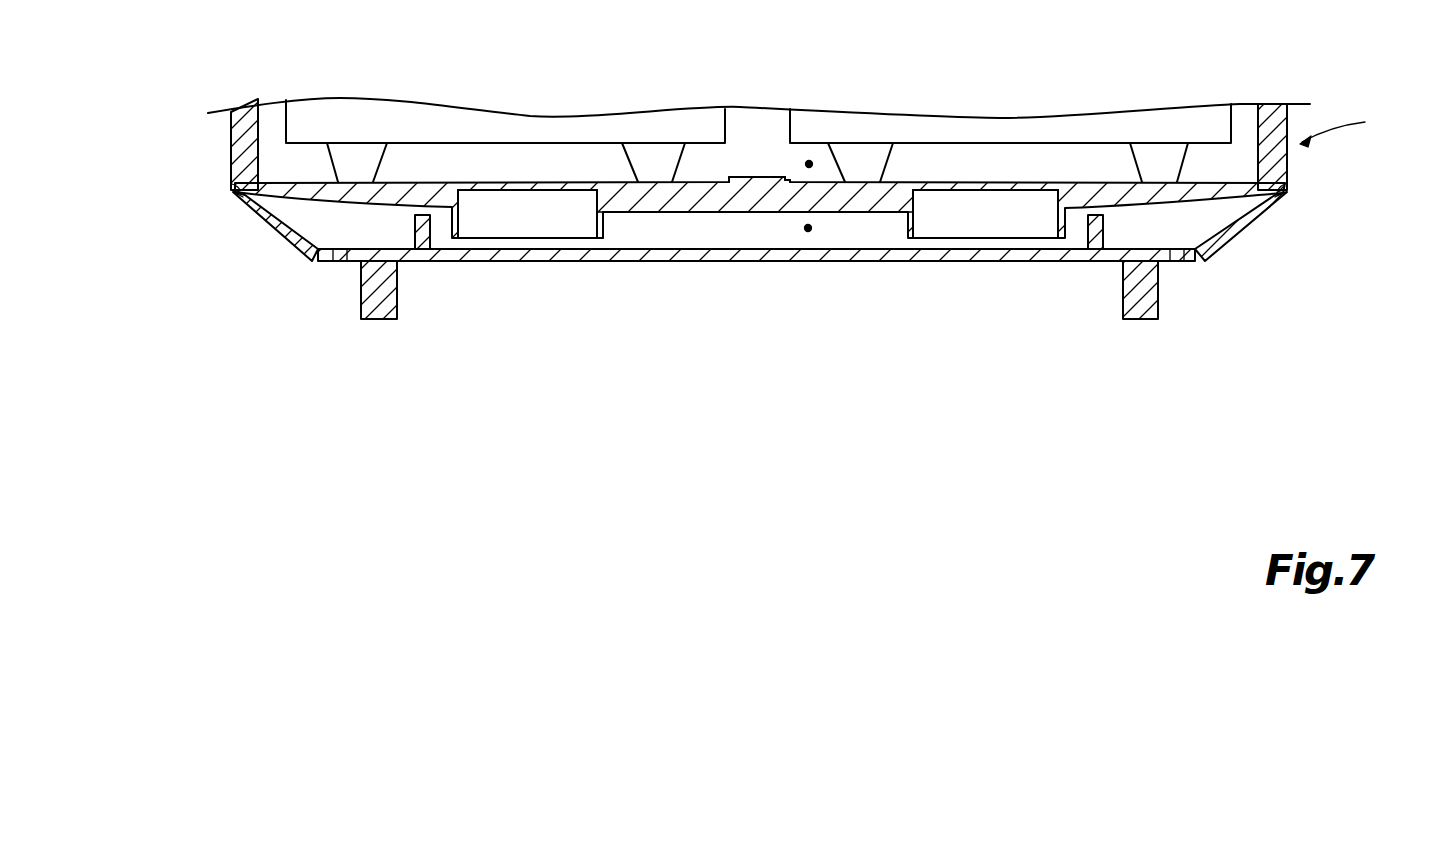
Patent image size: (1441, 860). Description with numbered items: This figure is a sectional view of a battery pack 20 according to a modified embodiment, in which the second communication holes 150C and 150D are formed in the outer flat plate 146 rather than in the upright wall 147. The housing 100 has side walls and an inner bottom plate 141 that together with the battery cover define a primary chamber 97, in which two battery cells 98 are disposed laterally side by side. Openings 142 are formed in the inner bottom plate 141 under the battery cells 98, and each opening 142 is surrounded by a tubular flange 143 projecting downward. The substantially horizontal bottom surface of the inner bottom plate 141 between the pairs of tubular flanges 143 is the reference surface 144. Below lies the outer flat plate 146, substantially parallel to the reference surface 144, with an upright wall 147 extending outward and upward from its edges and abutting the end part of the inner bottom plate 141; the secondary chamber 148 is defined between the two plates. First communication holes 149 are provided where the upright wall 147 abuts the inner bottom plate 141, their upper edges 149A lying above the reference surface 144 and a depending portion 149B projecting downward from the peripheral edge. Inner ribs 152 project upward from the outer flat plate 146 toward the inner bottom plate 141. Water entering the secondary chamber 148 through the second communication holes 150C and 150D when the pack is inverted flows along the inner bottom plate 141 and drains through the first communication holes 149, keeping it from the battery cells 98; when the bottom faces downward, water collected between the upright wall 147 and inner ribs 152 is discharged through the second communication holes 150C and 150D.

The battery pack 20 is at (1349, 127).
The primary chamber 97 is at (809, 160).
The battery cells 98 is at (664, 120).
The housing 100 is at (1280, 120).
The inner bottom plate 141 is at (1077, 193).
The openings 142 is at (530, 238).
The tubular flange 143 is at (610, 224).
The reference surface 144 is at (738, 218).
The outer flat plate 146 is at (696, 263).
The upright wall 147 is at (277, 230).
The secondary chamber 148 is at (808, 232).
The first communication hole 149 is at (237, 197).
The upper edge 149A is at (232, 182).
The depending portion 149B is at (232, 190).
The second communication hole 150C is at (410, 262).
The second communication hole 150D is at (327, 262).
The inner ribs 152 is at (428, 228).